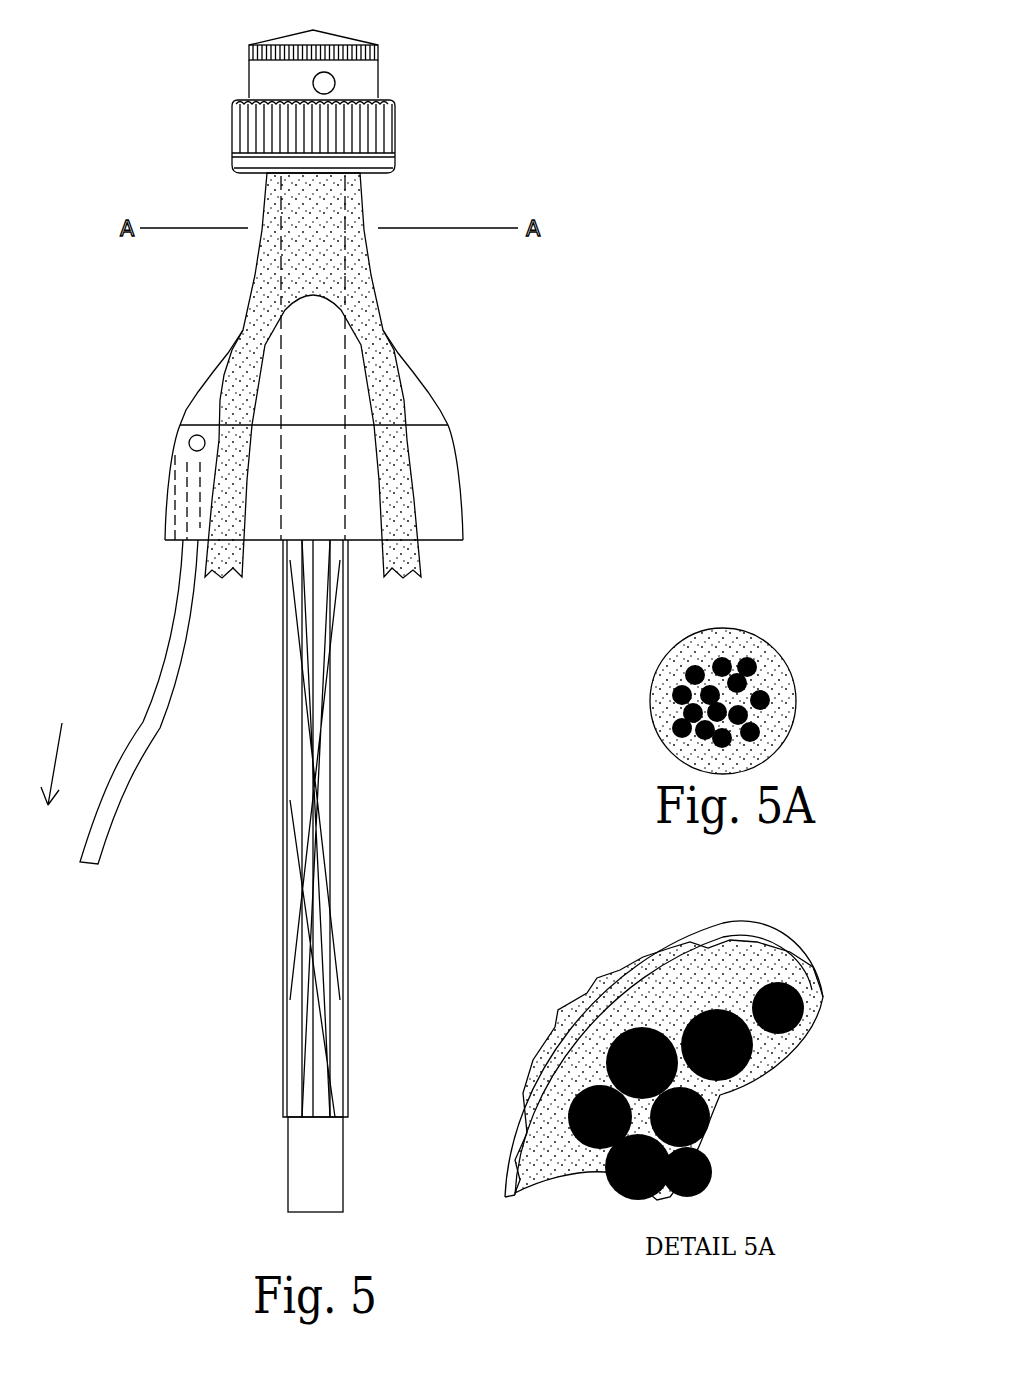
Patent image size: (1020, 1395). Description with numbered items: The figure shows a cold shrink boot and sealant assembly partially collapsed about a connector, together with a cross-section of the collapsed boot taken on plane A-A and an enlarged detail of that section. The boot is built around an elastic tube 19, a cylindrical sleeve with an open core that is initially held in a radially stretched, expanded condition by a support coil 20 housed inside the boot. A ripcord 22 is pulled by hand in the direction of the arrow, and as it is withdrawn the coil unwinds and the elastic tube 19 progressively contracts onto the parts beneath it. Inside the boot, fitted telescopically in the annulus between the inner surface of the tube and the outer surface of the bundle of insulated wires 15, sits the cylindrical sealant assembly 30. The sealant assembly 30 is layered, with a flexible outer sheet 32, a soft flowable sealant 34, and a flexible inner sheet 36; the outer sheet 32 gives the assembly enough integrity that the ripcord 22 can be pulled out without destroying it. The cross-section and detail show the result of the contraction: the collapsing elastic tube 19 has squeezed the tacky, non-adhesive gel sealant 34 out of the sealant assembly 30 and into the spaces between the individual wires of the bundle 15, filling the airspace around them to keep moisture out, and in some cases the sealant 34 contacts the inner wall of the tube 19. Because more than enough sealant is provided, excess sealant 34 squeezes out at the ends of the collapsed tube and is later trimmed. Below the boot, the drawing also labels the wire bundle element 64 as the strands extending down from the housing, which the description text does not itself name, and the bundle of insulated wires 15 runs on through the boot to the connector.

In FIG. 5A, the bundle of insulated wires 15 is at (793, 1027).
In FIG. 5, the elastic tube 19 is at (378, 203).
In FIG. 5A, the elastic tube 19 is at (653, 932).
In FIG. 5, the support coil 20 is at (168, 543).
In FIG. 5, the ripcord 22 is at (160, 602).
In FIG. 5, the sealant assembly 30 is at (232, 587).
In FIG. 5A, the flexible outer sheet 32 is at (802, 948).
In FIG. 5, the sealant 34 is at (393, 167).
In FIG. 5A, the sealant 34 is at (808, 983).
In FIG. 5A, the flexible inner sheet 36 is at (797, 960).
In FIG. 5, the fiber bundle 64 is at (283, 1040).